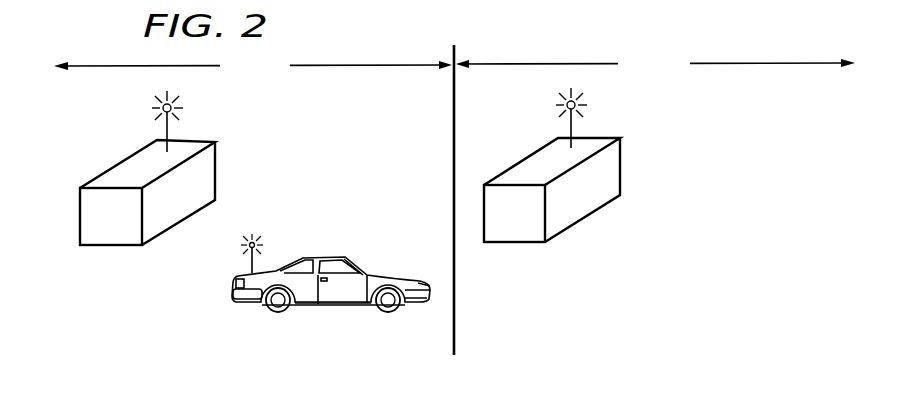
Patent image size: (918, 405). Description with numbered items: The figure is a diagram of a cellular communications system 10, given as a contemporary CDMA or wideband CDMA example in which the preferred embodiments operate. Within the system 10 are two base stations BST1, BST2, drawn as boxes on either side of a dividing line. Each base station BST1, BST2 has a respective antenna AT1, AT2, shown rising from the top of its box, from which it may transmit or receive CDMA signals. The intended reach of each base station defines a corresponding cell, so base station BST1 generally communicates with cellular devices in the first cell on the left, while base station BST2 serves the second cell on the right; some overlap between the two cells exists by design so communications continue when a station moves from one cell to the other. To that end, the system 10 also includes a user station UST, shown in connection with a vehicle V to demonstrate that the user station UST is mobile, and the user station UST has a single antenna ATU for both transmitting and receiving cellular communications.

The cellular communications system 10 is at (652, 302).
The base station BST1 is at (147, 192).
The base station BST2 is at (552, 190).
The antenna AT1 is at (167, 137).
The antenna AT2 is at (572, 130).
The vehicle V is at (392, 274).
The user station UST is at (323, 306).
The antenna ATU is at (249, 266).